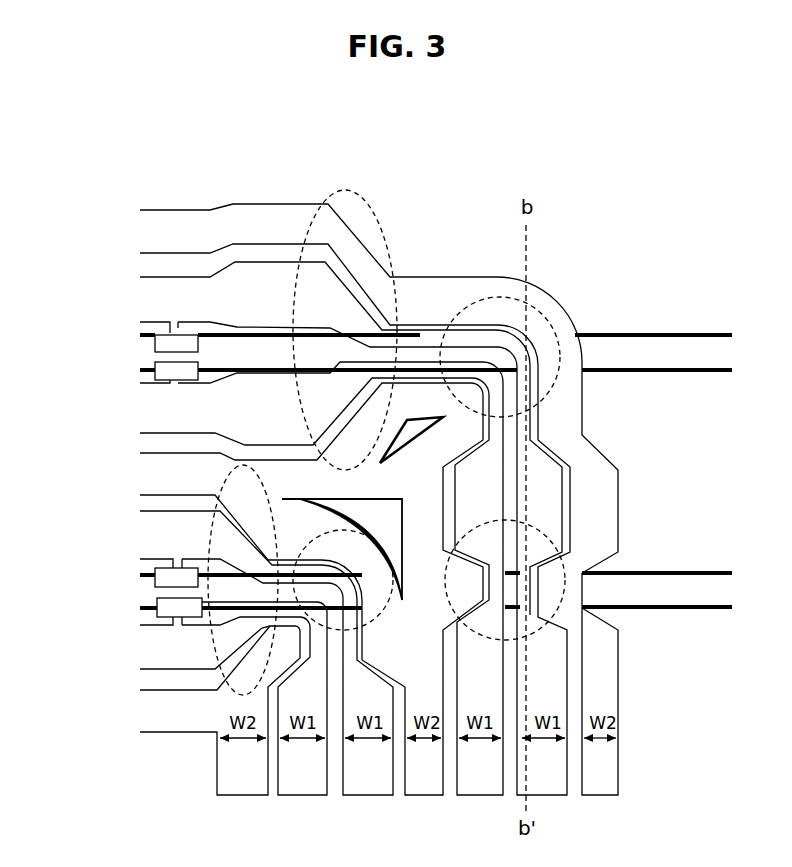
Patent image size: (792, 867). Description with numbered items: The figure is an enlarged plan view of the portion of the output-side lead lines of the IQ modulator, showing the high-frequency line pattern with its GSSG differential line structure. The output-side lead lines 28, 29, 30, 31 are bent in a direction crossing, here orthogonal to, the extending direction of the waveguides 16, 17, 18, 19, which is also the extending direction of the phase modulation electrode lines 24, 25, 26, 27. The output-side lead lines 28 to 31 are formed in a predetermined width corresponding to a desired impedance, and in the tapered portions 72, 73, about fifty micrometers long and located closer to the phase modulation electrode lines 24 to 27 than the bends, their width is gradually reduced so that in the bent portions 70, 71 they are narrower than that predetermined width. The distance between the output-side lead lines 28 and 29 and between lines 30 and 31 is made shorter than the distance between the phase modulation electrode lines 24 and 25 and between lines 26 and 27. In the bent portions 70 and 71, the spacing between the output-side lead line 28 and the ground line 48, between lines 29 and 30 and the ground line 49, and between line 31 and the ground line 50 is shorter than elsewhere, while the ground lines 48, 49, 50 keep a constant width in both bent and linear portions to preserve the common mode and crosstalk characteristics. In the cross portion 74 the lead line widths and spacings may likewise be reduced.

The waveguide 16 is at (663, 333).
The waveguide 17 is at (665, 373).
The waveguide 18 is at (664, 571).
The waveguide 19 is at (668, 610).
The phase modulation electrode line 24 is at (155, 295).
The phase modulation electrode line 25 is at (160, 410).
The phase modulation electrode line 26 is at (163, 533).
The phase modulation electrode line 27 is at (185, 648).
The output-side lead line 28 is at (540, 757).
The output-side lead line 29 is at (462, 757).
The output-side lead line 30 is at (360, 755).
The output-side lead line 31 is at (295, 757).
The ground line 48 is at (595, 757).
The ground line 49 is at (420, 757).
The ground line 50 is at (240, 757).
The bent portion 70 is at (545, 320).
The bent portion 71 is at (372, 625).
The tapered portion 72 is at (390, 245).
The tapered portion 73 is at (205, 478).
The cross portion 74 is at (538, 648).